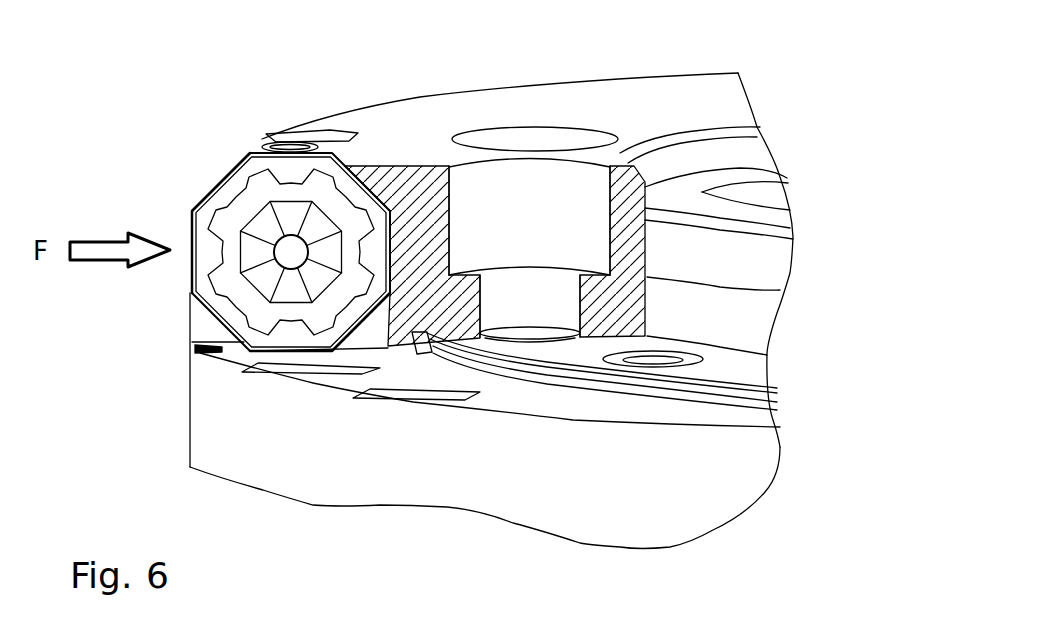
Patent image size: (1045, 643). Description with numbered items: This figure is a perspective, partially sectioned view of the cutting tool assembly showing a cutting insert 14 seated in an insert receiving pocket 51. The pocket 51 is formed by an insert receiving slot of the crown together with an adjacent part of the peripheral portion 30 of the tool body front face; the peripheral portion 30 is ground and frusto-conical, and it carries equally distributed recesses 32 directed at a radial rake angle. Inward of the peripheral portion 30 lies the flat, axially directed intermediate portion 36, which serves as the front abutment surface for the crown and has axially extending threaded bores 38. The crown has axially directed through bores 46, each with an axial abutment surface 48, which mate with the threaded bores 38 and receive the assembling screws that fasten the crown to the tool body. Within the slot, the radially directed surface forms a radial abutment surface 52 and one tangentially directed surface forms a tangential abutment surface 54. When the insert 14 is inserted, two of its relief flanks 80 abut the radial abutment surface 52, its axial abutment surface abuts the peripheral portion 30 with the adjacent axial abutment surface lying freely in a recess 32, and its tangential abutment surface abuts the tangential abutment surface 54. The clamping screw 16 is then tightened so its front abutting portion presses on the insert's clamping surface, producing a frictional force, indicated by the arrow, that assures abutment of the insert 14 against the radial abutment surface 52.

The cutting insert 14 is at (233, 197).
The clamping screw 16 is at (270, 140).
The peripheral portion 30 is at (463, 311).
The recess 32 is at (418, 392).
The intermediate portion 36 is at (747, 363).
The threaded bore 38 is at (653, 359).
The through bore 46 is at (610, 197).
The axial abutment surface 48 is at (478, 265).
The insert receiving pocket 51 is at (210, 348).
The radial abutment surface 52 is at (385, 337).
The tangential abutment surface 54 is at (208, 325).
The relief flank 80 is at (388, 272).